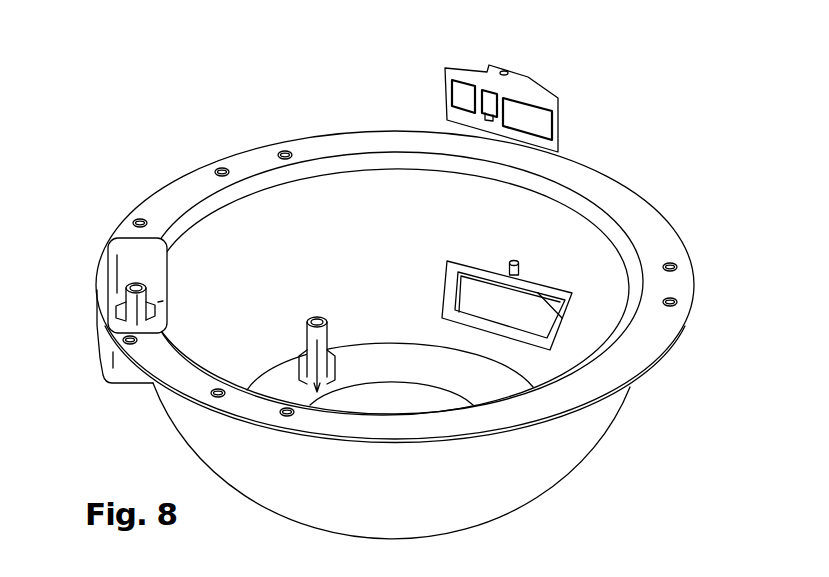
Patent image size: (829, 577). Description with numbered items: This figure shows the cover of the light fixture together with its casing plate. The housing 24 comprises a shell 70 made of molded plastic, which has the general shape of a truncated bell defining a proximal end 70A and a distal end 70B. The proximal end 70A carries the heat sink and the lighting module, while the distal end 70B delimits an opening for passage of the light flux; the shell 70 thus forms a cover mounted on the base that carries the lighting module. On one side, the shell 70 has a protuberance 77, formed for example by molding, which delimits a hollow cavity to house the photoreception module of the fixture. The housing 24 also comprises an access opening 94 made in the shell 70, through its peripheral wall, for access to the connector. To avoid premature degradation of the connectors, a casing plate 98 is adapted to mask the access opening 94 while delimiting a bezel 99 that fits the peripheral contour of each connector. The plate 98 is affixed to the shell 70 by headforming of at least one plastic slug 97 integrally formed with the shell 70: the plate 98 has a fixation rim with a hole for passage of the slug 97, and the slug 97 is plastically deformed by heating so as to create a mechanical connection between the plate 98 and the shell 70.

The housing 24 is at (531, 91).
The shell 70 is at (588, 420).
The proximal end 70A is at (385, 382).
The distal end 70B is at (618, 200).
The protuberance 77 is at (127, 383).
The access opening 94 is at (565, 320).
The plastic slug 97 is at (514, 263).
The casing plate 98 is at (540, 97).
The bezel 99 is at (490, 93).